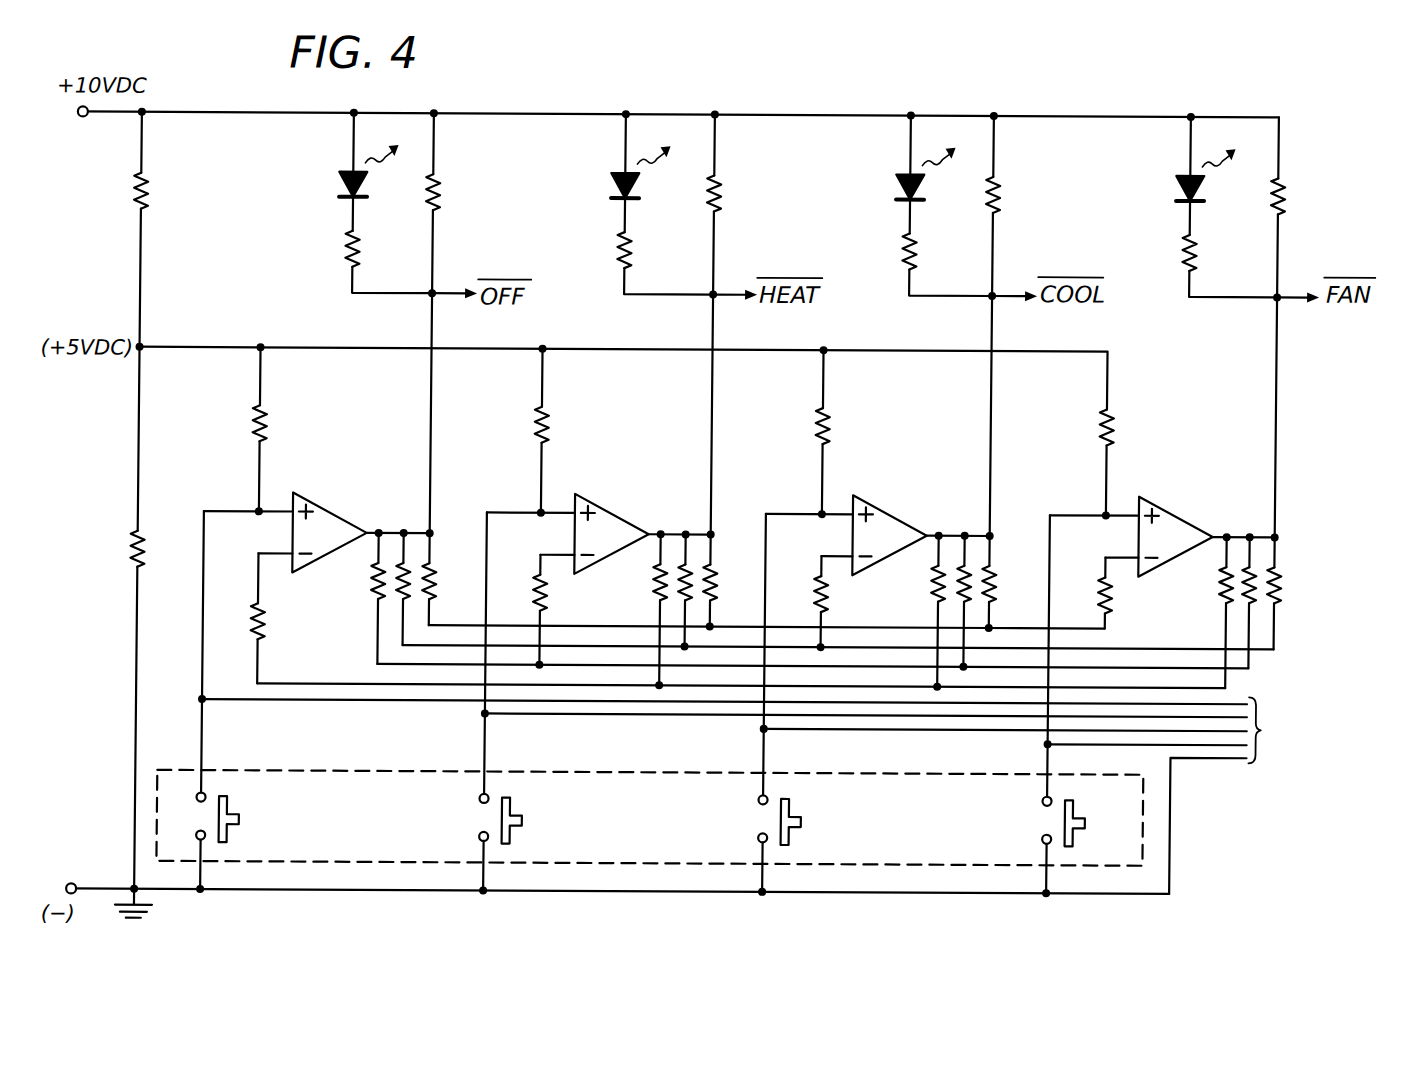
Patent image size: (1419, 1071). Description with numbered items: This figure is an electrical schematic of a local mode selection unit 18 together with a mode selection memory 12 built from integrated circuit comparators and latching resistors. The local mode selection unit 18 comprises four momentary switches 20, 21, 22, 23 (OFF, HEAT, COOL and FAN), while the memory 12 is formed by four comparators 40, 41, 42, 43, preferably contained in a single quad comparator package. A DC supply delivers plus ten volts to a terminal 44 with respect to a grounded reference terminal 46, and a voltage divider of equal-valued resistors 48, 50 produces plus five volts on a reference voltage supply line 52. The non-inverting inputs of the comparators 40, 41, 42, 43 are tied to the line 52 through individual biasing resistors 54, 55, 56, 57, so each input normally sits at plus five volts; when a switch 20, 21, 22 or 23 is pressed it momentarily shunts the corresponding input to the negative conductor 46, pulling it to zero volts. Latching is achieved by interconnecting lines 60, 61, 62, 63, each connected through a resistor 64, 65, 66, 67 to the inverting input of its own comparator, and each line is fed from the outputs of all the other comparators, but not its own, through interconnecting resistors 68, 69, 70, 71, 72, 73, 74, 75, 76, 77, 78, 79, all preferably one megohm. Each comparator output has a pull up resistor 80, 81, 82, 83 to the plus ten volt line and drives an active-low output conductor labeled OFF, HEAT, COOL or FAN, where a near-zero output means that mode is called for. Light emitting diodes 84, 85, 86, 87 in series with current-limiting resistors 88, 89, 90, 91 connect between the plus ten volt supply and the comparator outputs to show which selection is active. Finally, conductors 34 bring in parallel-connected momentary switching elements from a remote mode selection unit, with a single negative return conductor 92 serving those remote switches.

The mode selection memory 12 is at (1315, 393).
The local mode selection unit 18 is at (332, 769).
The momentary switch 20 is at (232, 795).
The momentary switch 21 is at (515, 795).
The momentary switch 22 is at (794, 795).
The momentary switch 23 is at (1078, 795).
The conductors from remote mode selection unit 34 is at (1214, 770).
The comparator 40 is at (340, 500).
The comparator 41 is at (620, 510).
The comparator 42 is at (898, 515).
The comparator 43 is at (1185, 508).
The terminal 44 is at (82, 118).
The grounded reference terminal 46 is at (84, 882).
The voltage divider resistor 48 is at (150, 188).
The voltage divider resistor 50 is at (136, 548).
The reference voltage supply line 52 is at (300, 346).
The biasing resistor 54 is at (271, 420).
The biasing resistor 55 is at (553, 420).
The biasing resistor 56 is at (834, 424).
The biasing resistor 57 is at (1118, 420).
The interconnecting line 60 is at (330, 682).
The interconnecting line 61 is at (572, 662).
The interconnecting line 62 is at (850, 643).
The interconnecting line 63 is at (1088, 609).
The resistor 64 is at (271, 612).
The resistor 65 is at (540, 588).
The resistor 66 is at (820, 588).
The resistor 67 is at (1104, 588).
The resistor 68 is at (377, 578).
The resistor 69 is at (403, 570).
The resistor 70 is at (442, 572).
The resistor 71 is at (658, 580).
The resistor 72 is at (686, 570).
The resistor 73 is at (723, 572).
The resistor 74 is at (936, 580).
The resistor 75 is at (965, 570).
The resistor 76 is at (1002, 572).
The resistor 77 is at (1226, 588).
The resistor 78 is at (1250, 570).
The resistor 79 is at (1287, 578).
The output pull up resistor 80 is at (442, 188).
The output pull up resistor 81 is at (723, 195).
The output pull up resistor 82 is at (1002, 190).
The output pull up resistor 83 is at (1287, 188).
The light emitting diode 84 is at (338, 184).
The light emitting diode 85 is at (613, 186).
The light emitting diode 86 is at (898, 184).
The light emitting diode 87 is at (1176, 183).
The series current-limiting resistor 88 is at (348, 247).
The series current-limiting resistor 89 is at (620, 249).
The series current-limiting resistor 90 is at (904, 248).
The series current-limiting resistor 91 is at (1186, 247).
The conductor 92 is at (1180, 868).